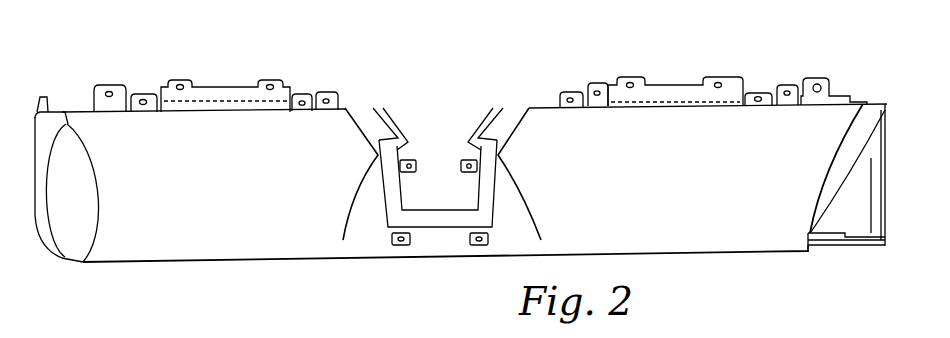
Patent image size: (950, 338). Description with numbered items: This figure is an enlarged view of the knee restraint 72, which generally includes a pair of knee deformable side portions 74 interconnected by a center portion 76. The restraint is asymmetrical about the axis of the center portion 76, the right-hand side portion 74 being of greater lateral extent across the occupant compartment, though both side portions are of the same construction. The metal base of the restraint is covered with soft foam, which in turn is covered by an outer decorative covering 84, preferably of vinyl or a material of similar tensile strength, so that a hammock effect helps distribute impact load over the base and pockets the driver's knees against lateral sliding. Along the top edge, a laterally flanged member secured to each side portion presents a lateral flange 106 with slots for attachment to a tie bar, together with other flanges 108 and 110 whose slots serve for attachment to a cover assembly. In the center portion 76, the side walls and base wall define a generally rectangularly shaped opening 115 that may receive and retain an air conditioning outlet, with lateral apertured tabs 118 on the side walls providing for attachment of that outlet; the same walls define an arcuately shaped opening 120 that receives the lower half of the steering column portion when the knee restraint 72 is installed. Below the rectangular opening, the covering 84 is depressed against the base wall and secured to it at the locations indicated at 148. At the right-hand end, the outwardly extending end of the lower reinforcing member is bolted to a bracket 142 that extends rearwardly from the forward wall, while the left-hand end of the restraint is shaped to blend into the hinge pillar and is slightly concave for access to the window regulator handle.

The knee restraint 72 is at (508, 100).
The knee deformable side portion 74 is at (245, 228).
The center portion 76 is at (365, 252).
The outer decorative covering 84 is at (775, 223).
The lateral flange 106 is at (224, 93).
The flange 108 is at (148, 100).
The flange 110 is at (100, 93).
The rectangularly shaped opening 115 is at (408, 210).
The lateral apertured tab 118 is at (468, 160).
The arcuately shaped opening 120 is at (396, 122).
The bracket 142 is at (882, 210).
The covering attachment area 148 is at (470, 238).